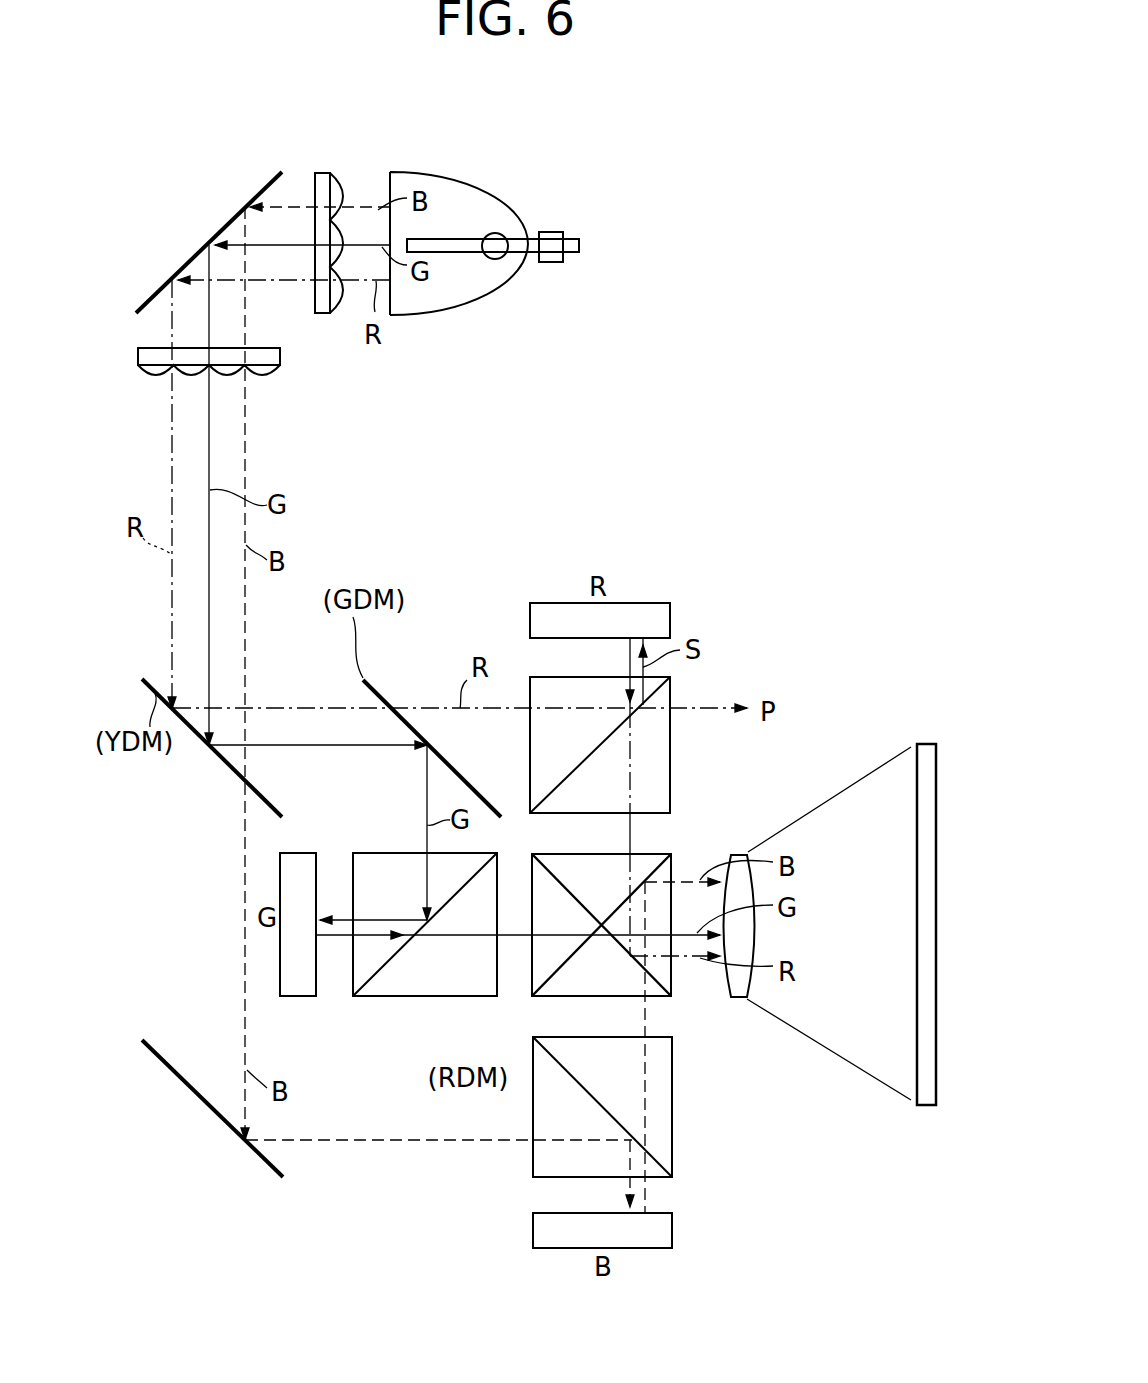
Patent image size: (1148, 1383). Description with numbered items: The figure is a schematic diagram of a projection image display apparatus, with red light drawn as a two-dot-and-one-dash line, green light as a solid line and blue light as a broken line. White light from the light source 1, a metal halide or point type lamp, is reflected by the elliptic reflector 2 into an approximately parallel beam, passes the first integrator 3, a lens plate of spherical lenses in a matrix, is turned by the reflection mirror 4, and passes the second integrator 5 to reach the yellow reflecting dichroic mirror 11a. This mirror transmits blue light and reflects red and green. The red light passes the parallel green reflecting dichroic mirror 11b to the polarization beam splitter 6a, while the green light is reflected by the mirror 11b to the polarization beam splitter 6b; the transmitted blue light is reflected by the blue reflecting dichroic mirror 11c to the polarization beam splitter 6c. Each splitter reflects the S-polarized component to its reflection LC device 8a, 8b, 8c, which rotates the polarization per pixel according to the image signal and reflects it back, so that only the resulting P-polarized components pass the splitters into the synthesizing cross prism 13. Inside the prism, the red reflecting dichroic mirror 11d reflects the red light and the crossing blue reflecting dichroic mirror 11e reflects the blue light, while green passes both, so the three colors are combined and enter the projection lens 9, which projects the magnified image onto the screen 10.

The light source 1 is at (550, 230).
The reflector 2 is at (478, 188).
The first integrator 3 is at (330, 172).
The reflection mirror 4 is at (282, 170).
The second integrator 5 is at (282, 351).
The polarization beam splitter 6a is at (670, 762).
The polarization beam splitter 6b is at (377, 997).
The polarization beam splitter 6c is at (672, 1100).
The red reflection LC device 8a is at (670, 613).
The green reflection LC device 8b is at (298, 997).
The blue reflection LC device 8c is at (672, 1223).
The projection lens 9 is at (738, 997).
The screen 10 is at (925, 1108).
The yellow reflecting dichroic mirror 11a is at (282, 815).
The green reflecting dichroic mirror 11b is at (363, 680).
The blue reflecting dichroic mirror 11c is at (285, 1178).
The red reflecting dichroic mirror 11d is at (625, 943).
The blue reflecting dichroic mirror 11e is at (648, 873).
The synthesizing cross prism 13 is at (588, 852).